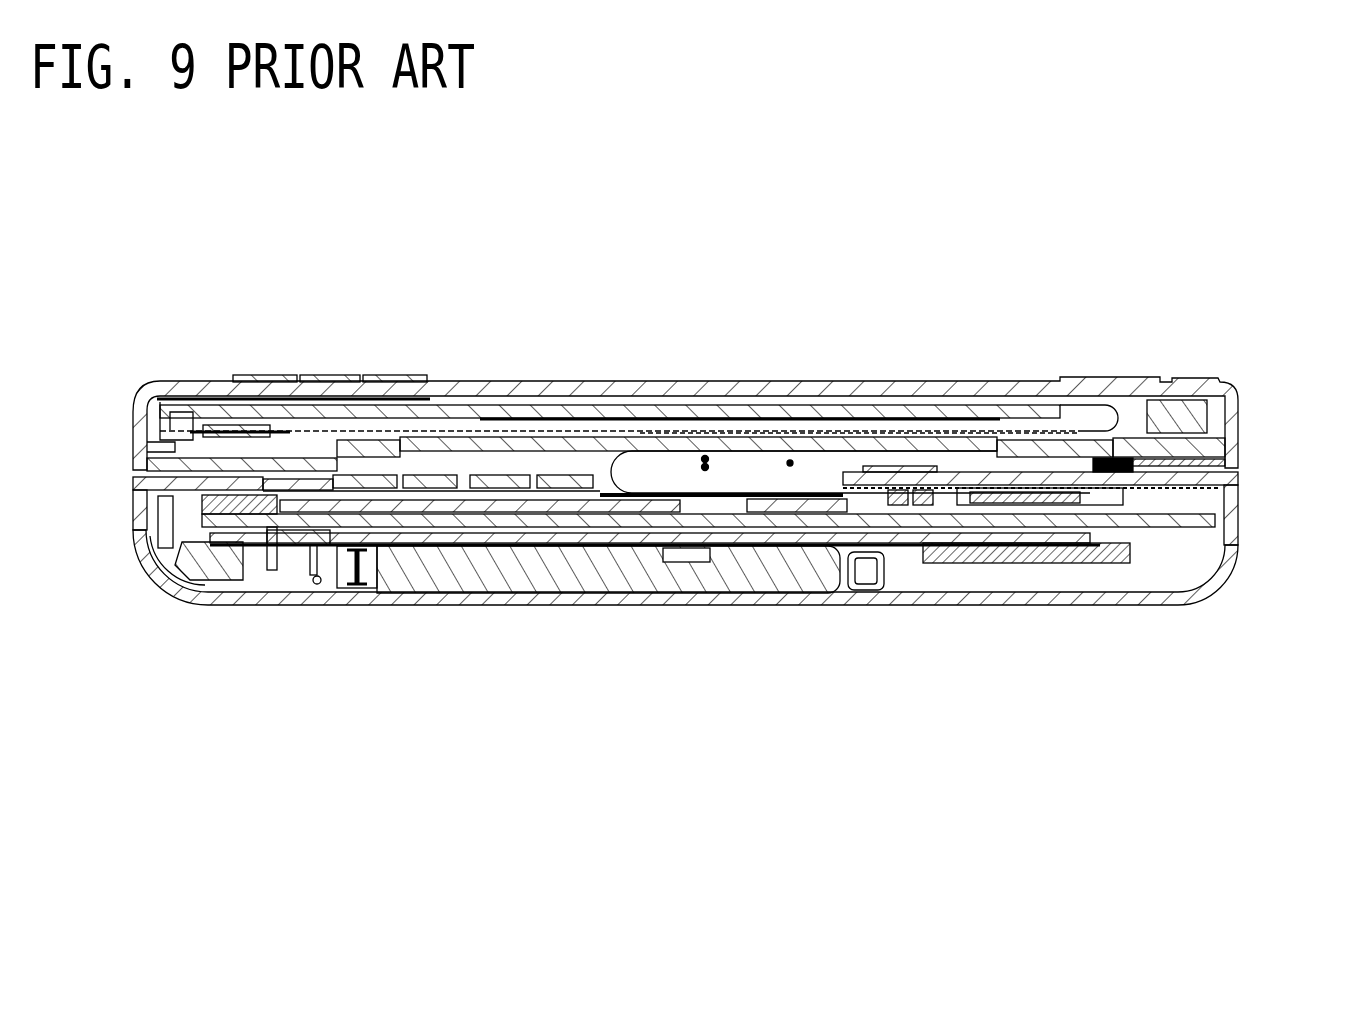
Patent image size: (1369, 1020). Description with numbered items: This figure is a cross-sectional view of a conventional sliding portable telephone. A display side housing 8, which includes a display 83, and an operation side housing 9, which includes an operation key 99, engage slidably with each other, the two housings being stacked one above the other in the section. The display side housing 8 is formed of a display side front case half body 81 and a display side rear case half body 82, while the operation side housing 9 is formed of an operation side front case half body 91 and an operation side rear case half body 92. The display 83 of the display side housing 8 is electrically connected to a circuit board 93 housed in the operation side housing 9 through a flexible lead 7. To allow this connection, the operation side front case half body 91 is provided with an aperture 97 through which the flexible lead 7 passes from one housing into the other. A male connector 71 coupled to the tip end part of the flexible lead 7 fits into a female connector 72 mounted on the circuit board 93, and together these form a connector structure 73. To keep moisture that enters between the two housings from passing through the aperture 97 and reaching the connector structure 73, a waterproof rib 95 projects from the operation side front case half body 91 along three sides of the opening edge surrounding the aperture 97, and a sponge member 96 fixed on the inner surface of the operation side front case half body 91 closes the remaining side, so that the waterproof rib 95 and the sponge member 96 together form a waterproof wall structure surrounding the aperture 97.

The flexible lead 7 is at (594, 450).
The display side housing 8 is at (748, 396).
The display side front case half body 81 is at (1232, 452).
The display side rear case half body 82 is at (1232, 394).
The display 83 is at (940, 388).
The operation side housing 9 is at (748, 508).
The operation side front case half body 91 is at (1232, 483).
The operation side rear case half body 92 is at (724, 567).
The circuit board 93 is at (1030, 563).
The waterproof rib 95 is at (620, 500).
The sponge member 96 is at (817, 546).
The aperture 97 is at (833, 480).
The operation key 99 is at (510, 472).
The male connector 71 is at (903, 506).
The female connector 72 is at (930, 506).
The connector structure 73 is at (928, 603).